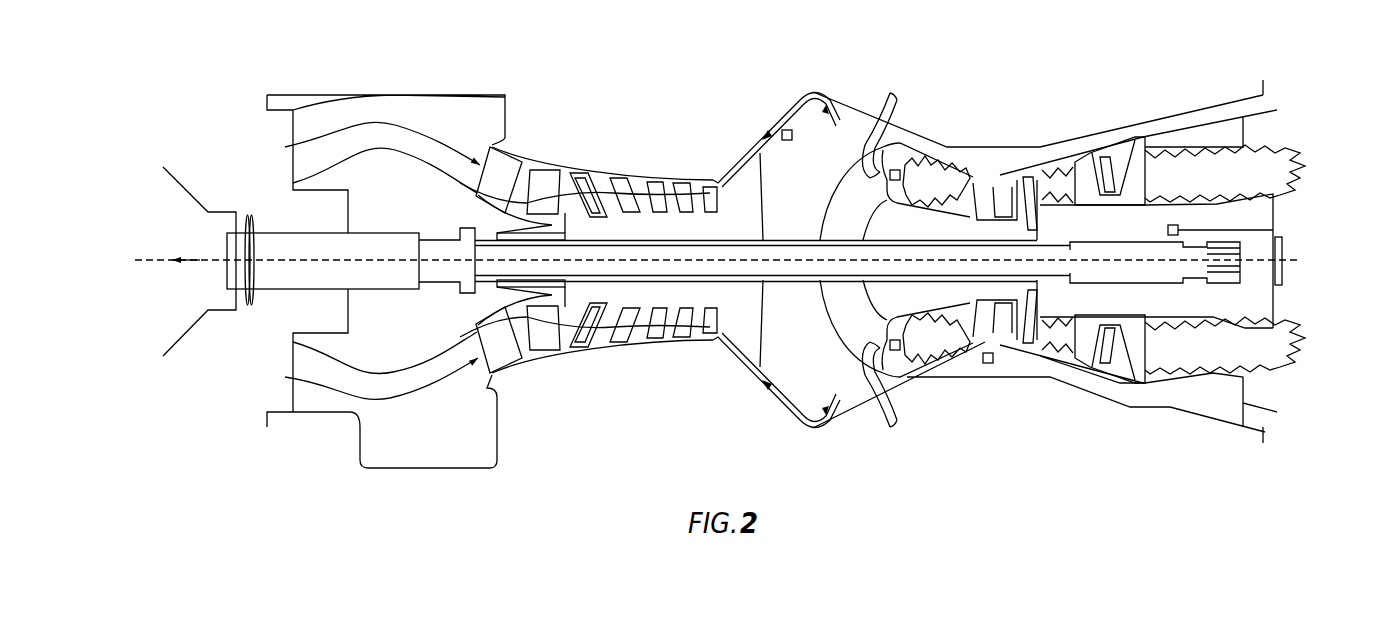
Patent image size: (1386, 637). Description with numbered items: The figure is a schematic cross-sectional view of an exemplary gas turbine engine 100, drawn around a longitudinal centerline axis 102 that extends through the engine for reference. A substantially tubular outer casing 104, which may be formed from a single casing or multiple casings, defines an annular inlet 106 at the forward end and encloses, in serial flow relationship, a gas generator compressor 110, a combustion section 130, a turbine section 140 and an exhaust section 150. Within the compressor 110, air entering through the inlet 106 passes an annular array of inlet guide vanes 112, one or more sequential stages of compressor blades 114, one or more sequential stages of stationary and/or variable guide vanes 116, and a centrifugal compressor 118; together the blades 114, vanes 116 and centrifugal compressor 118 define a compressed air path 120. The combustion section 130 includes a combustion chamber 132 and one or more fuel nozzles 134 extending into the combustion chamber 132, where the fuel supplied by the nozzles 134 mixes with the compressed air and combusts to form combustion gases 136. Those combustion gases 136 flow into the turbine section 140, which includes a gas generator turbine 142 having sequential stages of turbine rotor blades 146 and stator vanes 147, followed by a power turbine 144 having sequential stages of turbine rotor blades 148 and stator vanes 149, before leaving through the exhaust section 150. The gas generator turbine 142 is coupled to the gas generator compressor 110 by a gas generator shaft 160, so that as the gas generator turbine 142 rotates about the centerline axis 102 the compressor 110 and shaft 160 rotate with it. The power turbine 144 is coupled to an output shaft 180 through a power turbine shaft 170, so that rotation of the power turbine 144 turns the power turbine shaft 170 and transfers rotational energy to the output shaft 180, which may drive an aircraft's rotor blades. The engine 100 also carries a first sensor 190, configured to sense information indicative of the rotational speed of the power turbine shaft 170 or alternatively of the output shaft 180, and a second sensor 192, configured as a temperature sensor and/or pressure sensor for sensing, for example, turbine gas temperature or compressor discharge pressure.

The gas turbine engine 100 is at (290, 462).
The centerline axis 102 is at (160, 257).
The outer casing 104 is at (588, 163).
The annular inlet 106 is at (300, 125).
The gas generator compressor 110 is at (597, 357).
The inlet guide vanes 112 is at (542, 320).
The compressor blades 114 is at (580, 180).
The guide vanes 116 is at (635, 338).
The centrifugal compressor 118 is at (737, 347).
The compressed air path 120 is at (527, 170).
The combustion section 130 is at (857, 380).
The combustion chamber 132 is at (920, 147).
The fuel nozzles 134 is at (897, 140).
The combustion gases 136 is at (923, 337).
The turbine section 140 is at (1090, 470).
The gas generator turbine 142 is at (1038, 354).
The power turbine 144 is at (1160, 147).
The turbine rotor blades 146 is at (980, 187).
The stator vanes 147 is at (1028, 173).
The turbine rotor blades 148 is at (1083, 150).
The stator vanes 149 is at (1112, 160).
The exhaust section 150 is at (1237, 439).
The gas generator shaft 160 is at (793, 220).
The power turbine shaft 170 is at (1153, 270).
The output shaft 180 is at (263, 243).
The first sensor 190 is at (1182, 228).
The second sensor 192 is at (787, 130).